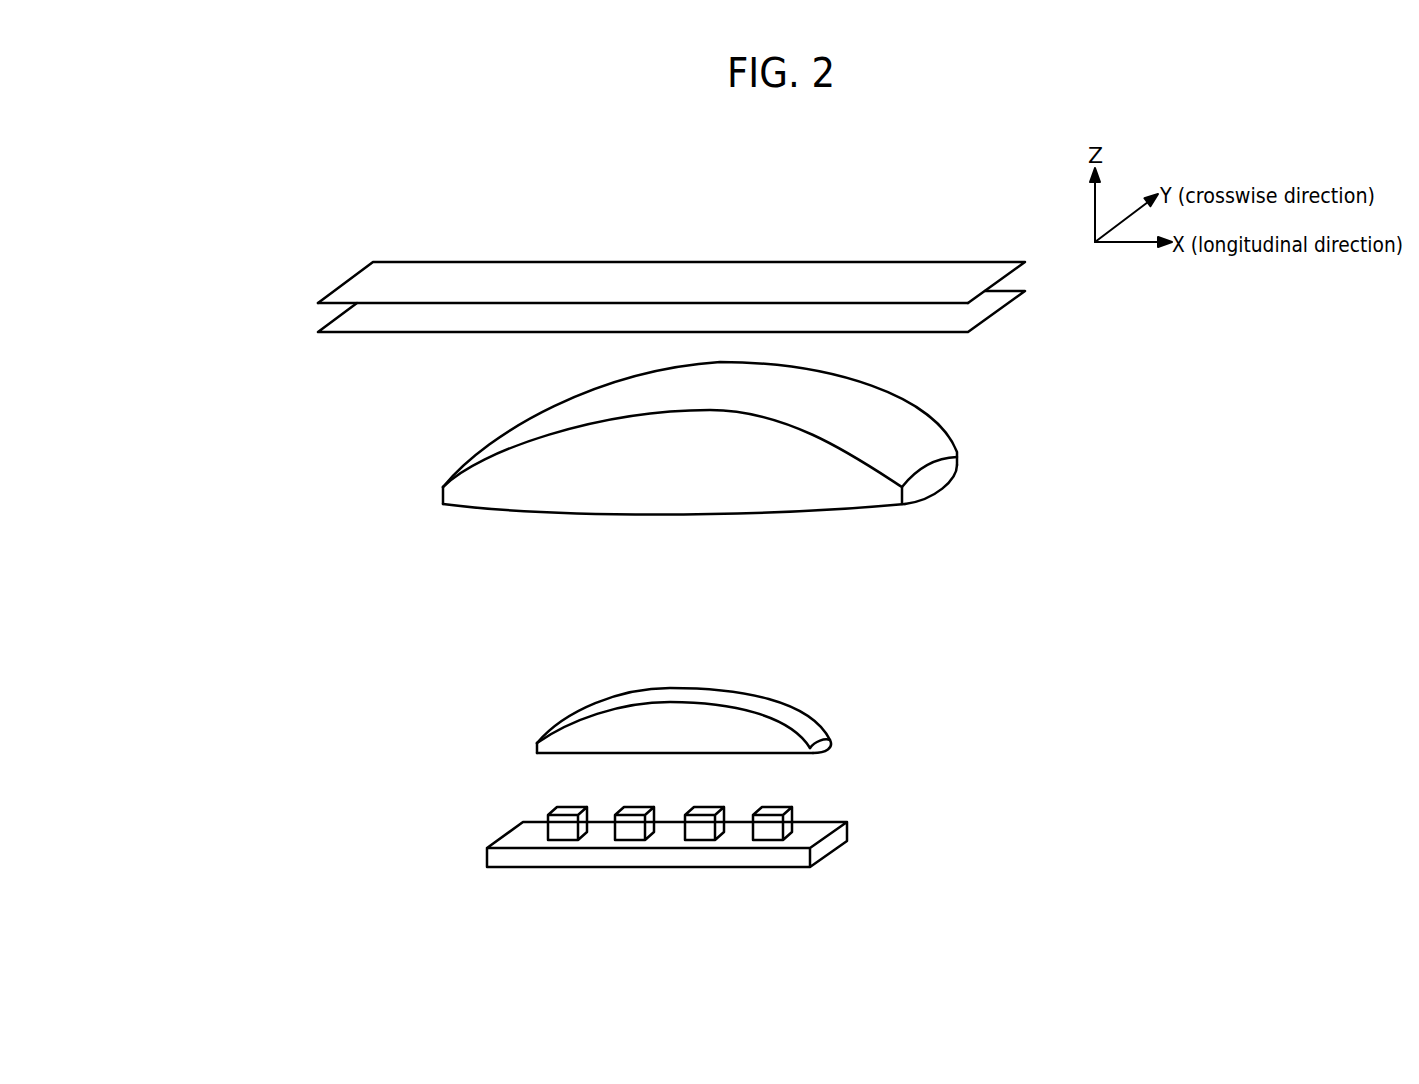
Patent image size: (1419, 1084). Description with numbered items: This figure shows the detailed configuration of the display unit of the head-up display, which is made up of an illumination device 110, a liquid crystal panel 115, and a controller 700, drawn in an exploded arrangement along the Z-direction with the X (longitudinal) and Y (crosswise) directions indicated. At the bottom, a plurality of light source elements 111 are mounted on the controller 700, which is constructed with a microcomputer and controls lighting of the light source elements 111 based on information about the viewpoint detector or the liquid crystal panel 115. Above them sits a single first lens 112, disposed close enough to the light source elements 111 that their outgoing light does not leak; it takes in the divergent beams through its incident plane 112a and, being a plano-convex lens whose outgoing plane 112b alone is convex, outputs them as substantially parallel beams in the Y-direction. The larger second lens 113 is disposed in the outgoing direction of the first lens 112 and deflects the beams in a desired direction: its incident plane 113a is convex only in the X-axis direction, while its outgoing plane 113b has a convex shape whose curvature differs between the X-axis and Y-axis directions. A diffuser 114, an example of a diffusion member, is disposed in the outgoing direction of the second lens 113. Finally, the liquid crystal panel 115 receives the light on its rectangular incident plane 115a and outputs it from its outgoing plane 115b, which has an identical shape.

The illumination device 110 is at (215, 263).
The light source elements 111 is at (543, 808).
The first lens 112 is at (567, 657).
The incident plane 112a is at (797, 756).
The outgoing plane 112b is at (816, 723).
The second lens 113 is at (594, 469).
The incident plane 113a is at (882, 506).
The outgoing plane 113b is at (920, 434).
The diffuser 114 is at (328, 321).
The liquid crystal panel 115 is at (696, 272).
The incident plane 115a is at (933, 304).
The outgoing plane 115b is at (983, 276).
The controller 700 is at (847, 830).